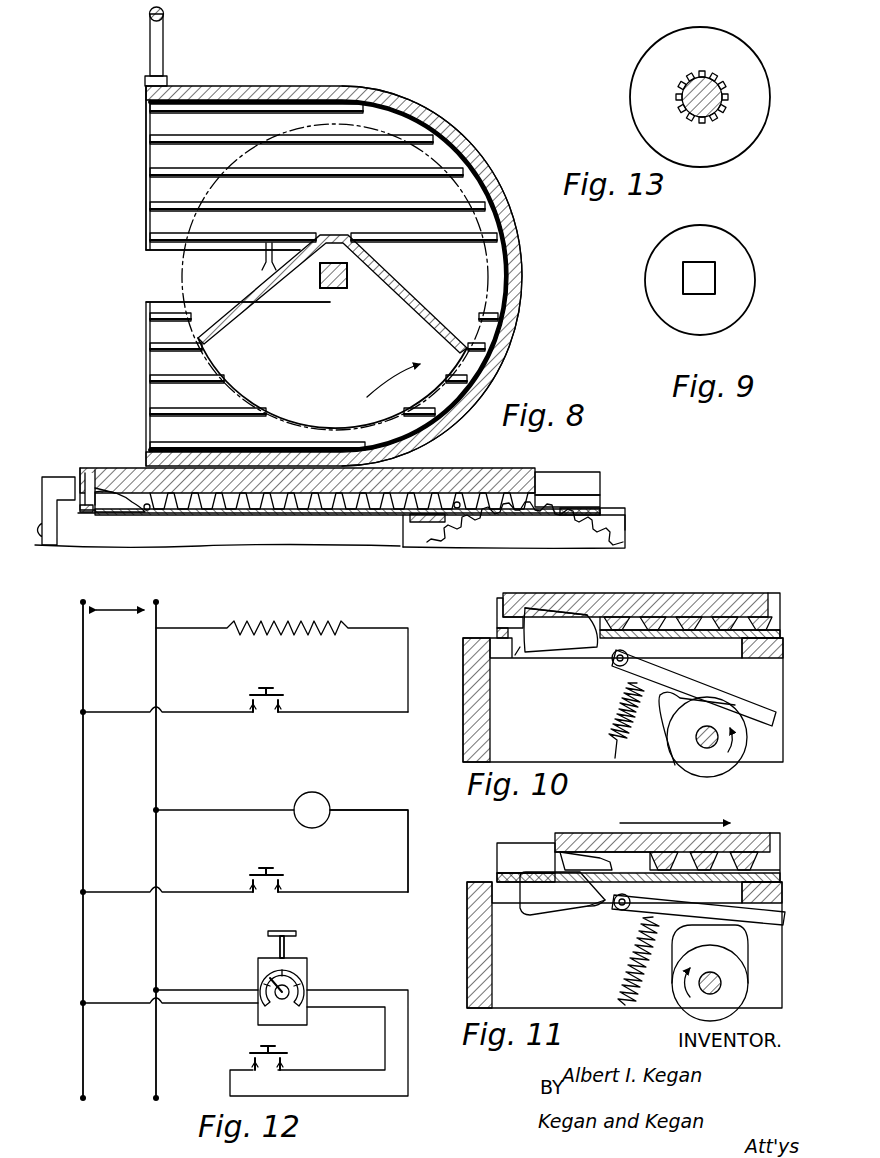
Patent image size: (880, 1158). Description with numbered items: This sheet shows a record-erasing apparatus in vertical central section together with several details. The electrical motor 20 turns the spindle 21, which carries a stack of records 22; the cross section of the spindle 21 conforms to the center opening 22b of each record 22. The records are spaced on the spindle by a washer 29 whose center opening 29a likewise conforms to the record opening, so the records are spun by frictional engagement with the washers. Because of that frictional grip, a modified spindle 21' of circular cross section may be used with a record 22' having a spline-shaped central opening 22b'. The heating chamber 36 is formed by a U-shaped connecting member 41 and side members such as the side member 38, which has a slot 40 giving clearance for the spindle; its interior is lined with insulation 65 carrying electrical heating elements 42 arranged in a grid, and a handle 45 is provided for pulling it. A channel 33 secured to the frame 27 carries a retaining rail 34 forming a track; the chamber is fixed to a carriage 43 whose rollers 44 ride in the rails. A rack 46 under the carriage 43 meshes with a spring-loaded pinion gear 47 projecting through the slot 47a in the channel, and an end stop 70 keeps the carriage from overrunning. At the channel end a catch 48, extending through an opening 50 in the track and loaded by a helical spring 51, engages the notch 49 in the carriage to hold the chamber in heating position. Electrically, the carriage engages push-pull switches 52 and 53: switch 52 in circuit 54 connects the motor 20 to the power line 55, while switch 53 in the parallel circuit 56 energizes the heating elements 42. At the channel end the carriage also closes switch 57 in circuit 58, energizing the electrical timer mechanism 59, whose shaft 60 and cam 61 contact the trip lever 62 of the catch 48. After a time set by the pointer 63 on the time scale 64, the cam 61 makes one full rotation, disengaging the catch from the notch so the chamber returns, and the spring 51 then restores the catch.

In FIG. 8, the electrical motor 20 is at (266, 262).
In FIG. 12, the electrical motor 20 is at (297, 800).
In FIG. 8, the spindle 21 is at (333, 297).
In FIG. 8, the record 22 is at (385, 303).
In FIG. 8, the center opening of the record 22b is at (306, 289).
In FIG. 8, the frame 27 is at (70, 535).
In FIG. 10, the frame 27 is at (475, 720).
In FIG. 11, the frame 27 is at (470, 940).
In FIG. 9, the washer 29 is at (732, 258).
In FIG. 9, the center opening of the washer 29a is at (707, 278).
In FIG. 8, the channel 33 is at (605, 478).
In FIG. 10, the channel 33 is at (497, 633).
In FIG. 11, the channel 33 is at (500, 877).
In FIG. 8, the retaining rail 34 is at (573, 475).
In FIG. 10, the retaining rail 34 is at (497, 605).
In FIG. 11, the retaining rail 34 is at (510, 850).
In FIG. 8, the heating chamber 36 is at (444, 117).
In FIG. 10, the heating chamber 36 is at (620, 592).
In FIG. 8, the side member 38 is at (158, 158).
In FIG. 8, the slot 40 is at (146, 300).
In FIG. 8, the U-shaped connecting member 41 is at (484, 172).
In FIG. 8, the electrical heating element 42 is at (230, 104).
In FIG. 12, the electrical heating element 42 is at (320, 628).
In FIG. 8, the carriage 43 is at (128, 468).
In FIG. 8, the roller 44 is at (147, 512).
In FIG. 10, the roller 44 is at (592, 608).
In FIG. 11, the roller 44 is at (650, 848).
In FIG. 8, the handle 45 is at (152, 38).
In FIG. 8, the rack 46 is at (266, 511).
In FIG. 10, the rack 46 is at (720, 600).
In FIG. 11, the rack 46 is at (740, 835).
In FIG. 8, the pinion gear 47 is at (520, 548).
In FIG. 8, the slot in the channel 47a is at (603, 497).
In FIG. 8, the catch 48 is at (118, 504).
In FIG. 10, the catch 48 is at (575, 648).
In FIG. 11, the catch 48 is at (545, 906).
In FIG. 8, the notch 49 is at (108, 490).
In FIG. 10, the notch 49 is at (548, 605).
In FIG. 11, the notch 49 is at (590, 846).
In FIG. 8, the opening in the track 50 is at (90, 512).
In FIG. 10, the opening in the track 50 is at (517, 655).
In FIG. 11, the opening in the track 50 is at (595, 901).
In FIG. 10, the helical spring 51 is at (625, 716).
In FIG. 11, the helical spring 51 is at (625, 960).
In FIG. 8, the push-pull switch 52 is at (425, 518).
In FIG. 12, the push-pull switch 52 is at (284, 882).
In FIG. 12, the push-pull switch 53 is at (284, 697).
In FIG. 12, the motor circuit 54 is at (372, 810).
In FIG. 12, the electric power line 55 is at (156, 770).
In FIG. 12, the heater circuit 56 is at (231, 712).
In FIG. 12, the push-pull switch 57 is at (291, 1062).
In FIG. 12, the timer circuit 58 is at (349, 990).
In FIG. 12, the electrical timer mechanism 59 is at (308, 966).
In FIG. 10, the shaft 60 is at (725, 740).
In FIG. 11, the shaft 60 is at (722, 983).
In FIG. 12, the shaft 60 is at (280, 946).
In FIG. 10, the cam 61 is at (680, 730).
In FIG. 11, the cam 61 is at (735, 956).
In FIG. 12, the cam 61 is at (292, 934).
In FIG. 10, the trip lever 62 is at (735, 700).
In FIG. 11, the trip lever 62 is at (695, 912).
In FIG. 12, the pointer 63 is at (278, 1000).
In FIG. 12, the time scale 64 is at (262, 985).
In FIG. 8, the insulation 65 is at (382, 100).
In FIG. 8, the end stop 70 is at (50, 490).
In FIG. 13, the record 22' is at (694, 92).
In FIG. 13, the spline-shaped central opening 22b' is at (646, 95).
In FIG. 13, the spindle 21' is at (652, 104).